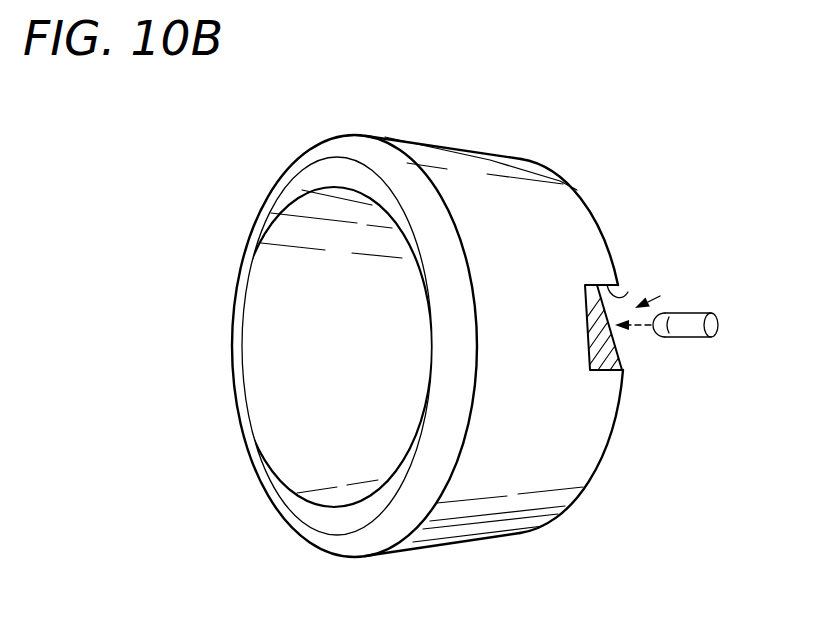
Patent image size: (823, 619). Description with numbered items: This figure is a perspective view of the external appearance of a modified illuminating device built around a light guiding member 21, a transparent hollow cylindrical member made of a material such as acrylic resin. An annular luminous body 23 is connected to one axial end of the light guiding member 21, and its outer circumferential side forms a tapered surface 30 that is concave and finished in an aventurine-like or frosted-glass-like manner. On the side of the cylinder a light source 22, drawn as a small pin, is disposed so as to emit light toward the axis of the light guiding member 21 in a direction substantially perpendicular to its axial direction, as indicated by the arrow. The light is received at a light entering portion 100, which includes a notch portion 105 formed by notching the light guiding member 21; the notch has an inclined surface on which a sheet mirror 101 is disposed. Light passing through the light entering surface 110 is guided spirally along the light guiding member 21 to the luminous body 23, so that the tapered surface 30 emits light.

The light guiding member 21 is at (478, 140).
The light source 22 is at (705, 315).
The annular luminous body 23 is at (330, 154).
The tapered surface 30 is at (350, 540).
The light entering portion 100 is at (660, 296).
The sheet mirror 101 is at (624, 366).
The notch portion 105 is at (633, 347).
The light entering surface 110 is at (628, 292).